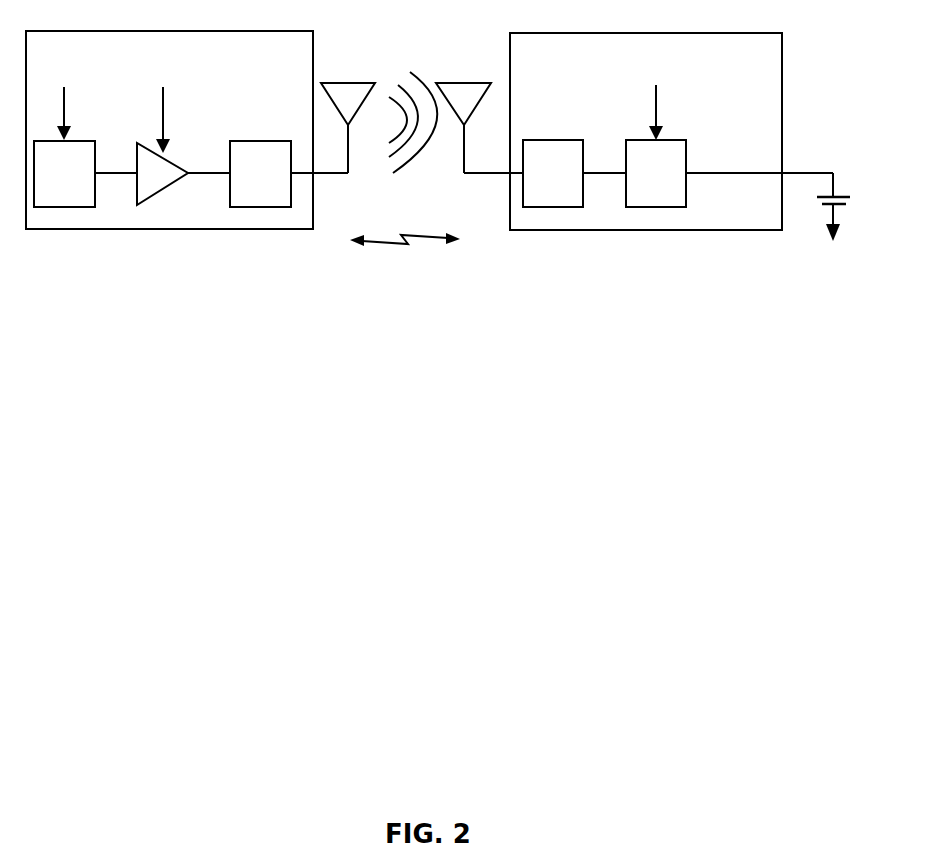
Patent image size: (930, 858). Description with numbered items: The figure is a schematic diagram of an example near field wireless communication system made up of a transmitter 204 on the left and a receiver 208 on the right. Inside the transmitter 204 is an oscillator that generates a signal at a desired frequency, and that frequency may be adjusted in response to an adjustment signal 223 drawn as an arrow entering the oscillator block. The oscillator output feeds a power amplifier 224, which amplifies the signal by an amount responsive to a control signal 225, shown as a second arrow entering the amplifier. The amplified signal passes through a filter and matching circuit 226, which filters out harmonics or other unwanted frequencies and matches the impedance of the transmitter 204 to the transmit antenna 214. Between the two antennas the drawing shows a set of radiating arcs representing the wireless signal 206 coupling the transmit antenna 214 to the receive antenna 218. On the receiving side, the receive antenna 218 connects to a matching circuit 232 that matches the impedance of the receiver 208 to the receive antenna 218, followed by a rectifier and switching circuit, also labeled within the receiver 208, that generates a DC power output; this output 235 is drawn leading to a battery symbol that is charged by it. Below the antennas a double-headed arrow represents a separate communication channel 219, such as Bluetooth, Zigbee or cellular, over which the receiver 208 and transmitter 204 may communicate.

The transmitter 204 is at (169, 130).
The transmit antenna 214 is at (352, 44).
The adjustment signal 223 is at (64, 102).
The power amplifier 224 is at (162, 180).
The control signal 225 is at (163, 102).
The filter and matching circuit 226 is at (458, 151).
The receive antenna 218 is at (478, 82).
The wireless power signal 206 is at (411, 178).
The communication channel 219 is at (411, 260).
The receiver 208 is at (646, 131).
The matching circuit 232 is at (553, 158).
The output / load connection 235 is at (656, 104).